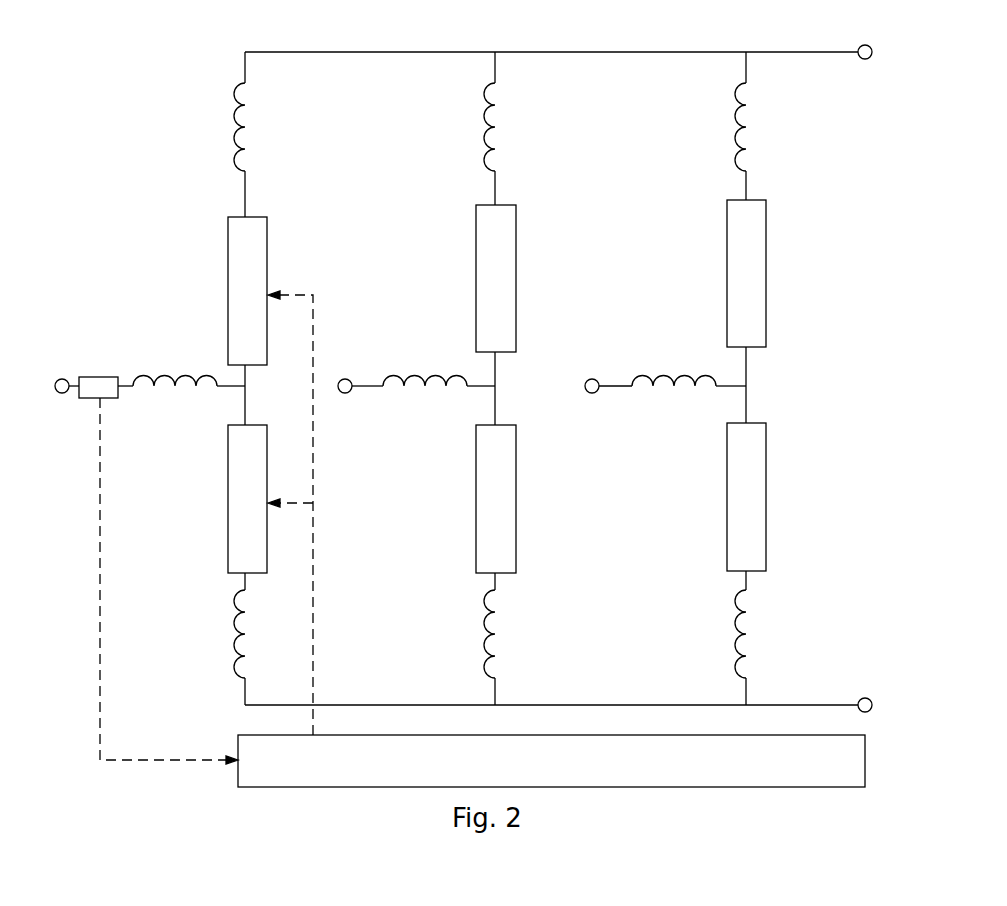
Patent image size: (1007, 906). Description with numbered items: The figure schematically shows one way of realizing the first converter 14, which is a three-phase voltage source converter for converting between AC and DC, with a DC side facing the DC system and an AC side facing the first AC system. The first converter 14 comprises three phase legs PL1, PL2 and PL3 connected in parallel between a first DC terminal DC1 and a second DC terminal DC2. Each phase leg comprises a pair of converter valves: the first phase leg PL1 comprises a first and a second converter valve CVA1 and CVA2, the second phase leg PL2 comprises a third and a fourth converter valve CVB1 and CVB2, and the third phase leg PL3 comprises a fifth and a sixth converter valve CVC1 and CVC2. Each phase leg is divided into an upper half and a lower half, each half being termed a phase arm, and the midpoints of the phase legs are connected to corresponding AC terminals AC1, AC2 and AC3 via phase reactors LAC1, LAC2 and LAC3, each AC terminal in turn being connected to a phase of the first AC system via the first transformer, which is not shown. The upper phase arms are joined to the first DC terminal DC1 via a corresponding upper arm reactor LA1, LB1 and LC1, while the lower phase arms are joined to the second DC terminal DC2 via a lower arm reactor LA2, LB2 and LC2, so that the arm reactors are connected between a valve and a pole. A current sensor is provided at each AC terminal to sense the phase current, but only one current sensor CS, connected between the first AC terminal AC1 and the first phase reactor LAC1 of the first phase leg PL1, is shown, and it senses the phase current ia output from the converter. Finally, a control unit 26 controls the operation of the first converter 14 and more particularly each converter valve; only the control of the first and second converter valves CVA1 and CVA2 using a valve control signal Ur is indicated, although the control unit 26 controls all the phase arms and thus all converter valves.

The first converter 14 is at (202, 86).
The control unit 26 is at (551, 761).
The first phase leg PL1 is at (266, 365).
The second phase leg PL2 is at (508, 365).
The third phase leg PL3 is at (758, 365).
The first upper arm reactor LA1 is at (213, 127).
The first lower arm reactor LA2 is at (210, 634).
The second upper arm reactor LB1 is at (463, 127).
The second lower arm reactor LB2 is at (459, 634).
The third upper arm reactor LC1 is at (707, 127).
The third lower arm reactor LC2 is at (708, 634).
The first converter valve CVA1 is at (209, 291).
The second converter valve CVA2 is at (207, 499).
The third converter valve CVB1 is at (456, 278).
The fourth converter valve CVB2 is at (454, 499).
The fifth converter valve CVC1 is at (709, 273).
The sixth converter valve CVC2 is at (706, 497).
The first phase reactor LAC1 is at (189, 398).
The second phase reactor LAC2 is at (439, 399).
The third phase reactor LAC3 is at (689, 401).
The first AC terminal AC1 is at (53, 368).
The second AC terminal AC2 is at (366, 371).
The third AC terminal AC3 is at (617, 371).
The current sensor CS is at (106, 371).
The first DC terminal DC1 is at (879, 71).
The second DC terminal DC2 is at (879, 683).
The valve control signal Ur is at (300, 498).
The phase current ia is at (169, 581).